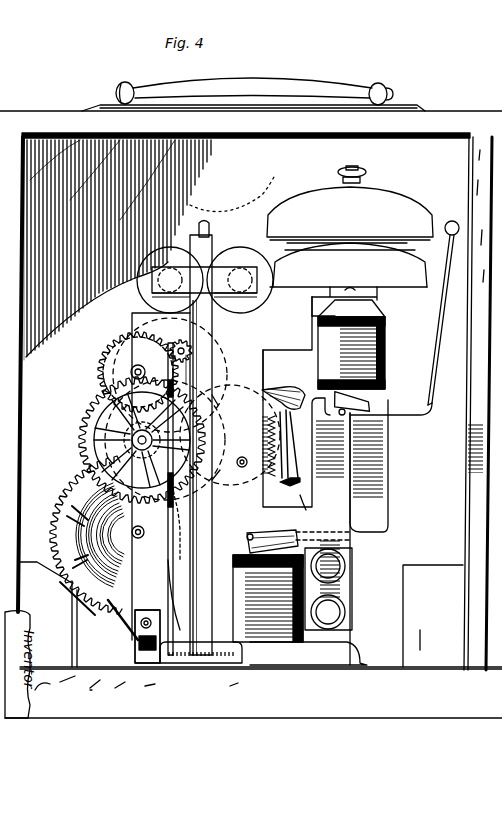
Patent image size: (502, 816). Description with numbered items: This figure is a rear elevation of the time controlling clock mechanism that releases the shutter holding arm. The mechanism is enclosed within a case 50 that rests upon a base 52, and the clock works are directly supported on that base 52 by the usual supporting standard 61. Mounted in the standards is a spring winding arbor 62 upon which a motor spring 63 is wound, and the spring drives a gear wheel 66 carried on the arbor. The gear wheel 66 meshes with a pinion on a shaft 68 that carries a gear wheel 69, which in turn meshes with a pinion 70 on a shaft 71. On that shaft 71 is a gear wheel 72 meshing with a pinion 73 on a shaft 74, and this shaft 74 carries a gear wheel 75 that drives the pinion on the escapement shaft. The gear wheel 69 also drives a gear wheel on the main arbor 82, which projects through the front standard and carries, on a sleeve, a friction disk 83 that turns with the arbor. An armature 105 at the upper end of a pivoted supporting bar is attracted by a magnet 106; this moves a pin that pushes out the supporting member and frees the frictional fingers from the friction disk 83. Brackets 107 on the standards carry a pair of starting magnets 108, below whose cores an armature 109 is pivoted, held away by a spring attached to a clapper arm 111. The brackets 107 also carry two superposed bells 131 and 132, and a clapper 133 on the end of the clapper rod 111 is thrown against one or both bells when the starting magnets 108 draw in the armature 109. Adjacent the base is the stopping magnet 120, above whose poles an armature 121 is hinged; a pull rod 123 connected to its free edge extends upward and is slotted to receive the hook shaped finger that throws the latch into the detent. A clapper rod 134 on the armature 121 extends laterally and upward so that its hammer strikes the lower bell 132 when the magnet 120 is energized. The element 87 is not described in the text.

The case 50 is at (24, 348).
The base 52 is at (261, 683).
The supporting standard 61 is at (330, 498).
The spring winding arbor 62 is at (143, 530).
The motor spring 63 is at (112, 606).
The gear wheel 66 is at (66, 490).
The shaft 68 is at (132, 440).
The gear wheel 69 is at (88, 415).
The pinion 70 is at (128, 368).
The shaft 71 is at (147, 361).
The gear wheel 72 is at (128, 325).
The pinion 73 is at (192, 346).
The shaft 74 is at (190, 358).
The gear wheel 75 is at (192, 385).
The main arbor 82 is at (242, 457).
The friction disk 83 is at (286, 470).
The pawl 87 is at (282, 436).
The armature 105 is at (228, 272).
The magnet 106 is at (251, 308).
The bracket 107 is at (296, 306).
The starting magnet 108 is at (387, 360).
The armature 109 is at (362, 418).
The clapper arm 111 is at (431, 418).
The stopping magnet 120 is at (268, 598).
The armature 121 is at (278, 540).
The pull rod 123 is at (300, 500).
The bell 131 is at (350, 204).
The bell 132 is at (350, 265).
The clapper 133 is at (452, 221).
The clapper rod 134 is at (389, 459).